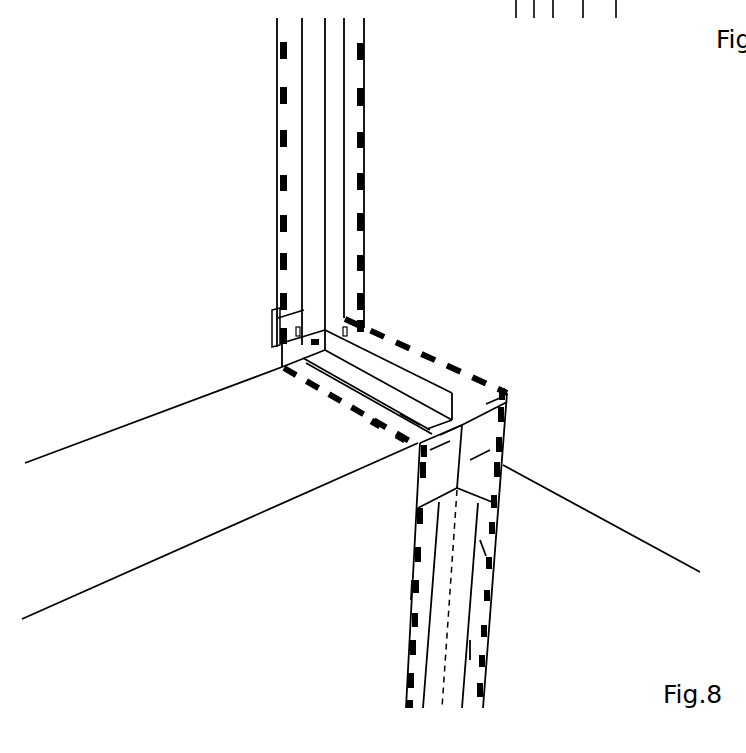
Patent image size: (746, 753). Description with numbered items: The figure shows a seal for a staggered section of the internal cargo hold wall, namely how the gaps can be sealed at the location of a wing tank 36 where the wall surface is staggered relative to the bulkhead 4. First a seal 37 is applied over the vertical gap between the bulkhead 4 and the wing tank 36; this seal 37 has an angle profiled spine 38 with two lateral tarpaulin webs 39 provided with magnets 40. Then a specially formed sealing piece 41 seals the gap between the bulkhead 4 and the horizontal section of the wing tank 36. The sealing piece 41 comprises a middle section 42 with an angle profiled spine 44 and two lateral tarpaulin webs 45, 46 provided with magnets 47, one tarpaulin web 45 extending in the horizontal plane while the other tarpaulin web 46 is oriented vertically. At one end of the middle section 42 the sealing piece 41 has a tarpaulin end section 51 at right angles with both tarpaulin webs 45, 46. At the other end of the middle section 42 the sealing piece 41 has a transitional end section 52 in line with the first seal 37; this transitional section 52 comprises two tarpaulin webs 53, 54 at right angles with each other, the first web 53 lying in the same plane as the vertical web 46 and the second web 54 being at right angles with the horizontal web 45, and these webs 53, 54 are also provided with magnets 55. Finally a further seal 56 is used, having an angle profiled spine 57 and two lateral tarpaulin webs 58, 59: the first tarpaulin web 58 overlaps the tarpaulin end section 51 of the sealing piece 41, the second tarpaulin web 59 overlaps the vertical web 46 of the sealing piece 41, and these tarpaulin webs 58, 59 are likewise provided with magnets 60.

The further seal 56 is at (276, 40).
The angle profiled spine 57 is at (307, 80).
The first tarpaulin web 58 is at (283, 155).
The second tarpaulin web 59 is at (353, 123).
The magnets 60 is at (360, 97).
The tarpaulin end section 51 is at (283, 343).
The wing tank 36 is at (178, 430).
The middle section 42 is at (374, 370).
The sealing piece 41 is at (413, 353).
The angle profiled spine 44 is at (442, 402).
The horizontal tarpaulin web 45 is at (398, 422).
The magnets 47 is at (399, 435).
The transitional end section 52 is at (487, 421).
The vertical tarpaulin web 46 is at (486, 406).
The second tarpaulin web 54 is at (450, 442).
The magnets 55 is at (440, 452).
The first tarpaulin web 53 is at (480, 458).
The seal 37 is at (458, 609).
The angle profiled spine 38 is at (458, 651).
The lateral tarpaulin webs 39 is at (485, 548).
The magnets 40 is at (417, 590).
The bulkhead 4 is at (667, 535).